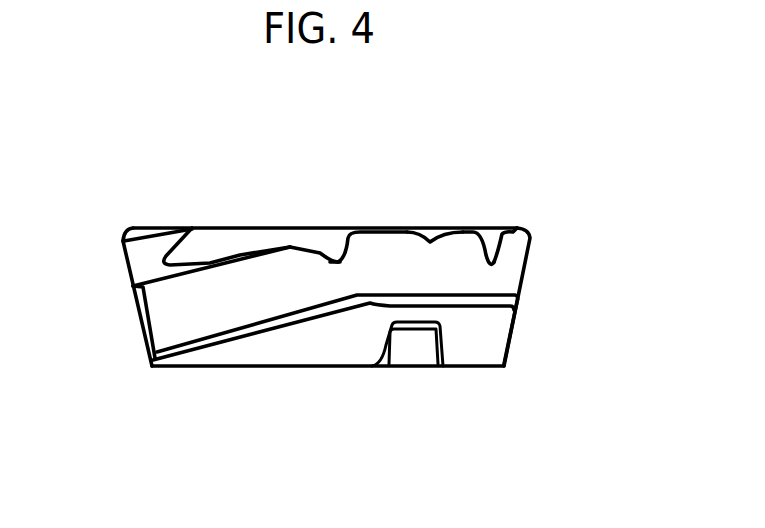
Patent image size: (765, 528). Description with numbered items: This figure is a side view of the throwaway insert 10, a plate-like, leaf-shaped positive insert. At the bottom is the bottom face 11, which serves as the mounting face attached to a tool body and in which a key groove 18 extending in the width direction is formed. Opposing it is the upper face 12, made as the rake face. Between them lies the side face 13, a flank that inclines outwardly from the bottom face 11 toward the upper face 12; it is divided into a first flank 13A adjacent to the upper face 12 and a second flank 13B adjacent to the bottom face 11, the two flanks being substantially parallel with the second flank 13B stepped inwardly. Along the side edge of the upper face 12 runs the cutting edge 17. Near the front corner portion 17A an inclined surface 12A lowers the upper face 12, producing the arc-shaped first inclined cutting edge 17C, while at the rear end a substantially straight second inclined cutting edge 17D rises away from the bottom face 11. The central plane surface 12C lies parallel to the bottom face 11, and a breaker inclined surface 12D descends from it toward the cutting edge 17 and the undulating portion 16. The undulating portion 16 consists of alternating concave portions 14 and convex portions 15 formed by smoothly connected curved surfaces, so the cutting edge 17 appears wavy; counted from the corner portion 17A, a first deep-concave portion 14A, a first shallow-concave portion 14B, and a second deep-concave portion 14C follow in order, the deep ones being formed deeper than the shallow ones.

The throwaway insert 10 is at (568, 154).
The bottom face 11 is at (325, 367).
The upper face 12 is at (312, 228).
The inclined surface 12A is at (136, 257).
The plane surface 12C is at (238, 229).
The breaker inclined surface 12D is at (333, 243).
The side face 13 is at (257, 333).
The first flank 13A is at (183, 332).
The second flank 13B is at (211, 350).
The concave portions 14 is at (501, 190).
The first deep-concave portion 14A is at (352, 236).
The first shallow-concave portion 14B is at (470, 235).
The second deep-concave portion 14C is at (492, 252).
The convex portions 15 is at (285, 246).
The undulating portion 16 is at (418, 230).
The cutting edge 17 is at (505, 252).
The corner portion 17A is at (140, 305).
The first inclined cutting edge 17C is at (209, 268).
The second inclined cutting edge 17D is at (132, 280).
The key groove 18 is at (422, 350).